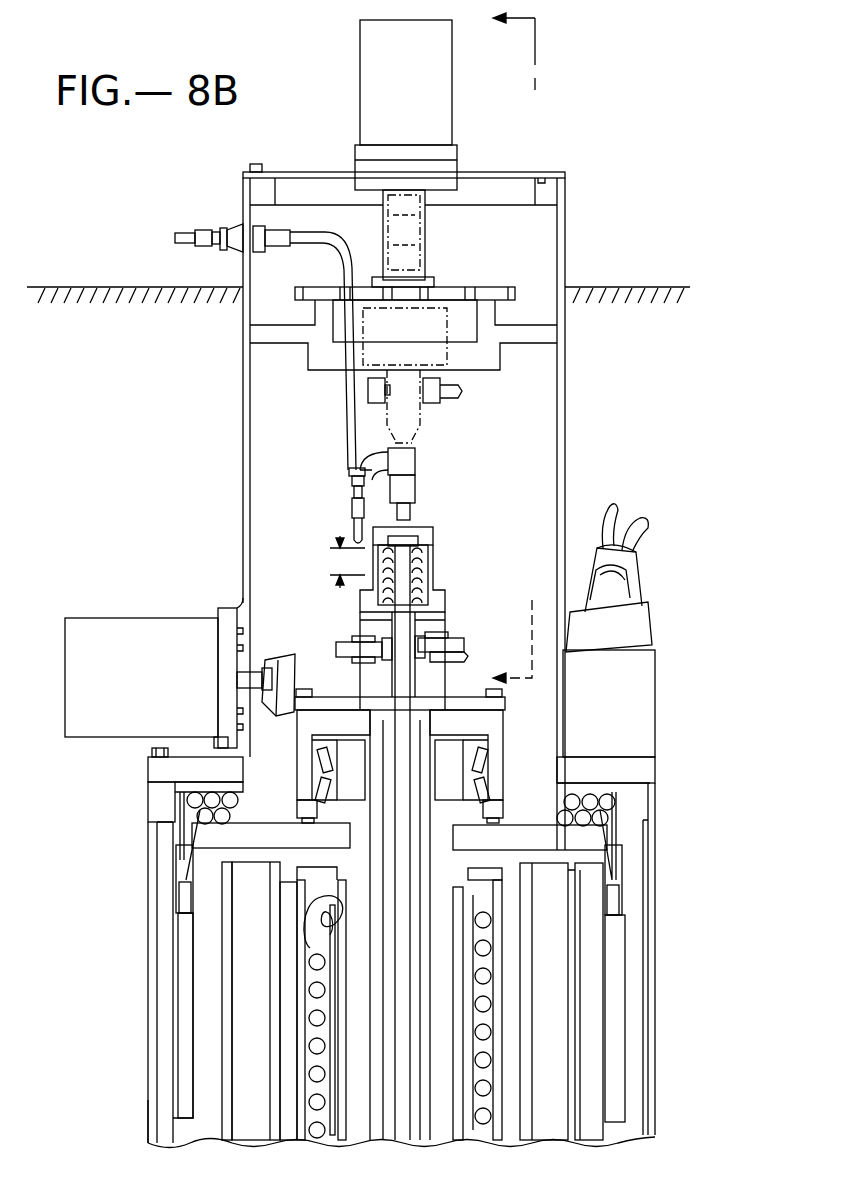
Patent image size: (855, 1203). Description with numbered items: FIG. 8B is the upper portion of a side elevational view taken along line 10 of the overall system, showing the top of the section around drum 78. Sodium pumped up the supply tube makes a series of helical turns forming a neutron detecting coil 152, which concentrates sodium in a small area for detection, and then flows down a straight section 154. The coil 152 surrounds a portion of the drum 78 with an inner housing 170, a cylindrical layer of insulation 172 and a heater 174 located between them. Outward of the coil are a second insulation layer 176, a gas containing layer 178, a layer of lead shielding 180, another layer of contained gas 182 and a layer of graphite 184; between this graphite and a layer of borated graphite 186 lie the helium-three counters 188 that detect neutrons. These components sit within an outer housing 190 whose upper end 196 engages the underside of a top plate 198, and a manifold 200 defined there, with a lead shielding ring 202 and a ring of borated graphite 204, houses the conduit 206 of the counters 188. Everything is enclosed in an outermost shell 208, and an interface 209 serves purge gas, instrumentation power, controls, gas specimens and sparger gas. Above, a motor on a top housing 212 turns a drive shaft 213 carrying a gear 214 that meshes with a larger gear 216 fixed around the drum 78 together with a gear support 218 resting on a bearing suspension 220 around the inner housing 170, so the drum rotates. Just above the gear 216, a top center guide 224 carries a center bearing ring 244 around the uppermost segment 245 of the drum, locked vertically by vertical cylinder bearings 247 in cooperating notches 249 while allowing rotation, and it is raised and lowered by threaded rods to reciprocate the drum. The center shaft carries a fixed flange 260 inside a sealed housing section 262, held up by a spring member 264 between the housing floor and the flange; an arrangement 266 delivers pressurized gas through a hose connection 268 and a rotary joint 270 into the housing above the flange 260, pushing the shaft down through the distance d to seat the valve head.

The section line 10 is at (501, 351).
The drum 78 is at (425, 850).
The neutron detecting coil 152 is at (490, 945).
The straight section 154 is at (322, 1142).
The inner housing 170 is at (440, 1142).
The cylindrical layer of insulation 172 is at (456, 1143).
The heater 174 is at (514, 1143).
The second insulation layer 176 is at (293, 1143).
The gas containing layer 178 is at (284, 1143).
The layer of lead shielding 180 is at (240, 1142).
The layer of contained gas 182 is at (190, 1145).
The layer of graphite 184 is at (205, 1075).
The layer of borated graphite 186 is at (165, 1010).
The He3 counters 188 is at (185, 1038).
The outer housing 190 is at (150, 940).
The upper end 196 is at (155, 800).
The top plate 198 is at (158, 768).
The manifold 200 is at (200, 808).
The lead shielding ring 202 is at (302, 793).
The ring of borated graphite 204 is at (271, 834).
The conduit 206 is at (610, 802).
The outermost shell 208 is at (152, 1106).
The interface 209 is at (645, 557).
The top housing 212 is at (243, 484).
The drive shaft 213 is at (237, 678).
The gear 214 is at (288, 690).
The larger gear 216 is at (303, 688).
The gear support 218 is at (320, 757).
The bearing suspension 220 is at (345, 775).
The top center guide 224 is at (452, 646).
The center bearing ring 244 is at (455, 658).
The uppermost segment 245 is at (418, 626).
The vertical cylinder bearings 247 is at (380, 655).
The notches 249 is at (372, 615).
The fixed flange 260 is at (428, 545).
The sealed housing section 262 is at (433, 560).
The spring member 264 is at (422, 583).
The arrangement 266 is at (350, 386).
The hose connection 268 is at (320, 245).
The rotary joint 270 is at (412, 492).